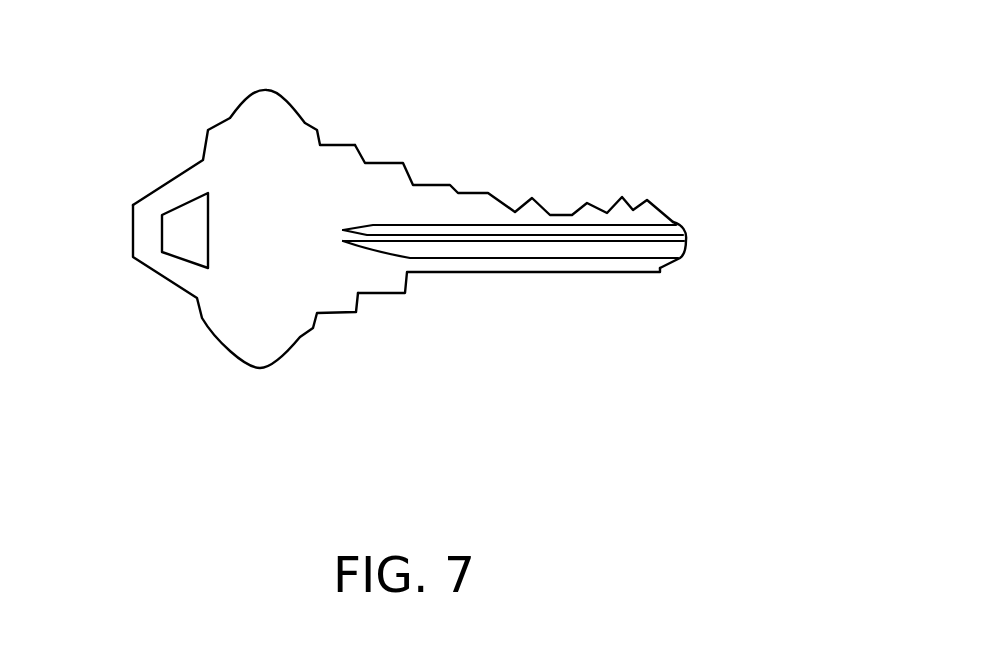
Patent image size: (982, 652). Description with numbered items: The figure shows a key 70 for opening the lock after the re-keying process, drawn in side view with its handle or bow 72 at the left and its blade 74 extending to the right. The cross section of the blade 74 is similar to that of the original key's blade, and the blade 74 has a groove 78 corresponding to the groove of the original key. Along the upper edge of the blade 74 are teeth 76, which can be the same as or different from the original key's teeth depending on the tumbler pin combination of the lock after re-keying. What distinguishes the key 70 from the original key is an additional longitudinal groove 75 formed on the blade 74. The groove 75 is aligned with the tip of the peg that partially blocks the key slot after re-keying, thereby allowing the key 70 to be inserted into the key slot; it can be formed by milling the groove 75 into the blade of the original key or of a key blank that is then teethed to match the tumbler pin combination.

The key 70 is at (464, 226).
The bow 72 is at (250, 147).
The blade 74 is at (664, 263).
The longitudinal groove 75 is at (678, 223).
The teeth 76 is at (620, 195).
The groove 78 is at (685, 245).